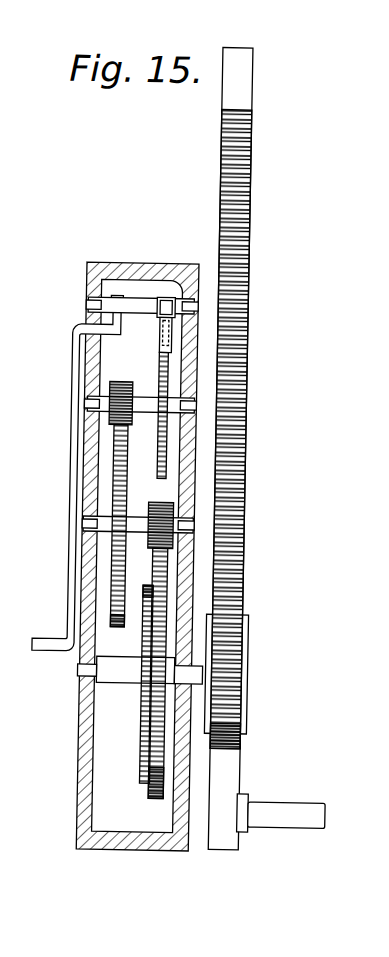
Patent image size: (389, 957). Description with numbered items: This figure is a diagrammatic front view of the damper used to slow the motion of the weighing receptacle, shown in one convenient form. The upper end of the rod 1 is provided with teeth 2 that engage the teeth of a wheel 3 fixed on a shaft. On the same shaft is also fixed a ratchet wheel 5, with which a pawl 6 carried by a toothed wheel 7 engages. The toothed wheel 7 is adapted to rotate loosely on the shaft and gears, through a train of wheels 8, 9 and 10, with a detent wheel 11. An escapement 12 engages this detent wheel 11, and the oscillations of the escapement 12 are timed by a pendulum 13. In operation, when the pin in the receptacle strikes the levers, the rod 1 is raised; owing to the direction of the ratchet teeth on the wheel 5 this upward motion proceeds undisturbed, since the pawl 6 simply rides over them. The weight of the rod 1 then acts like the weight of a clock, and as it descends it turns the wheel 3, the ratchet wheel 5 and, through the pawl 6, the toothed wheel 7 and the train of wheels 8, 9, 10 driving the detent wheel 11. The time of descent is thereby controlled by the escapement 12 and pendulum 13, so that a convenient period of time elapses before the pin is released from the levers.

The rod 1 is at (240, 100).
The teeth 2 is at (244, 292).
The wheel 3 is at (237, 663).
The ratchet wheel 5 is at (151, 729).
The pawl 6 is at (149, 773).
The toothed wheel 7 is at (167, 798).
The wheel 8 is at (167, 502).
The wheel 9 is at (117, 468).
The wheel 10 is at (122, 383).
The detent wheel 11 is at (169, 377).
The escapement 12 is at (160, 325).
The pendulum 13 is at (76, 588).